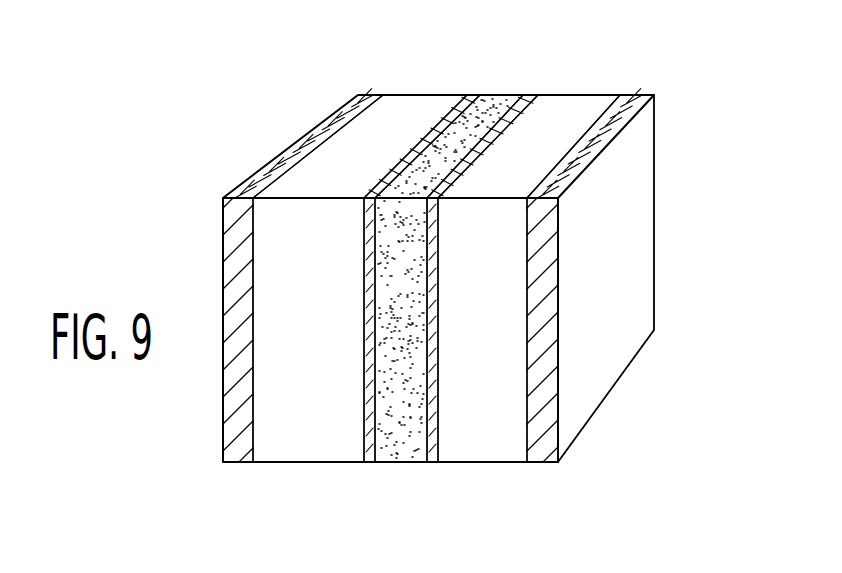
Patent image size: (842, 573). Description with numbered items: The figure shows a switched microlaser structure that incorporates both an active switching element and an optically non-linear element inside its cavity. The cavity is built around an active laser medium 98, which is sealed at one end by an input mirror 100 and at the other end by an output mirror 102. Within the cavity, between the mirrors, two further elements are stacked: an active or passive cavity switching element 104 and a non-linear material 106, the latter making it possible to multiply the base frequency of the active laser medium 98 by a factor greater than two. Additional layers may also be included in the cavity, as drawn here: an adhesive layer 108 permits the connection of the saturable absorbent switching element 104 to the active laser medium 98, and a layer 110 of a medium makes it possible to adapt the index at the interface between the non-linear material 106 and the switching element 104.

The active laser medium 98 is at (410, 98).
The input mirror 100 is at (285, 152).
The output mirror 102 is at (630, 115).
The cavity switching element 104 is at (502, 100).
The non-linear material 106 is at (587, 100).
The adhesive layer 108 is at (366, 450).
The index-adapting layer 110 is at (433, 443).